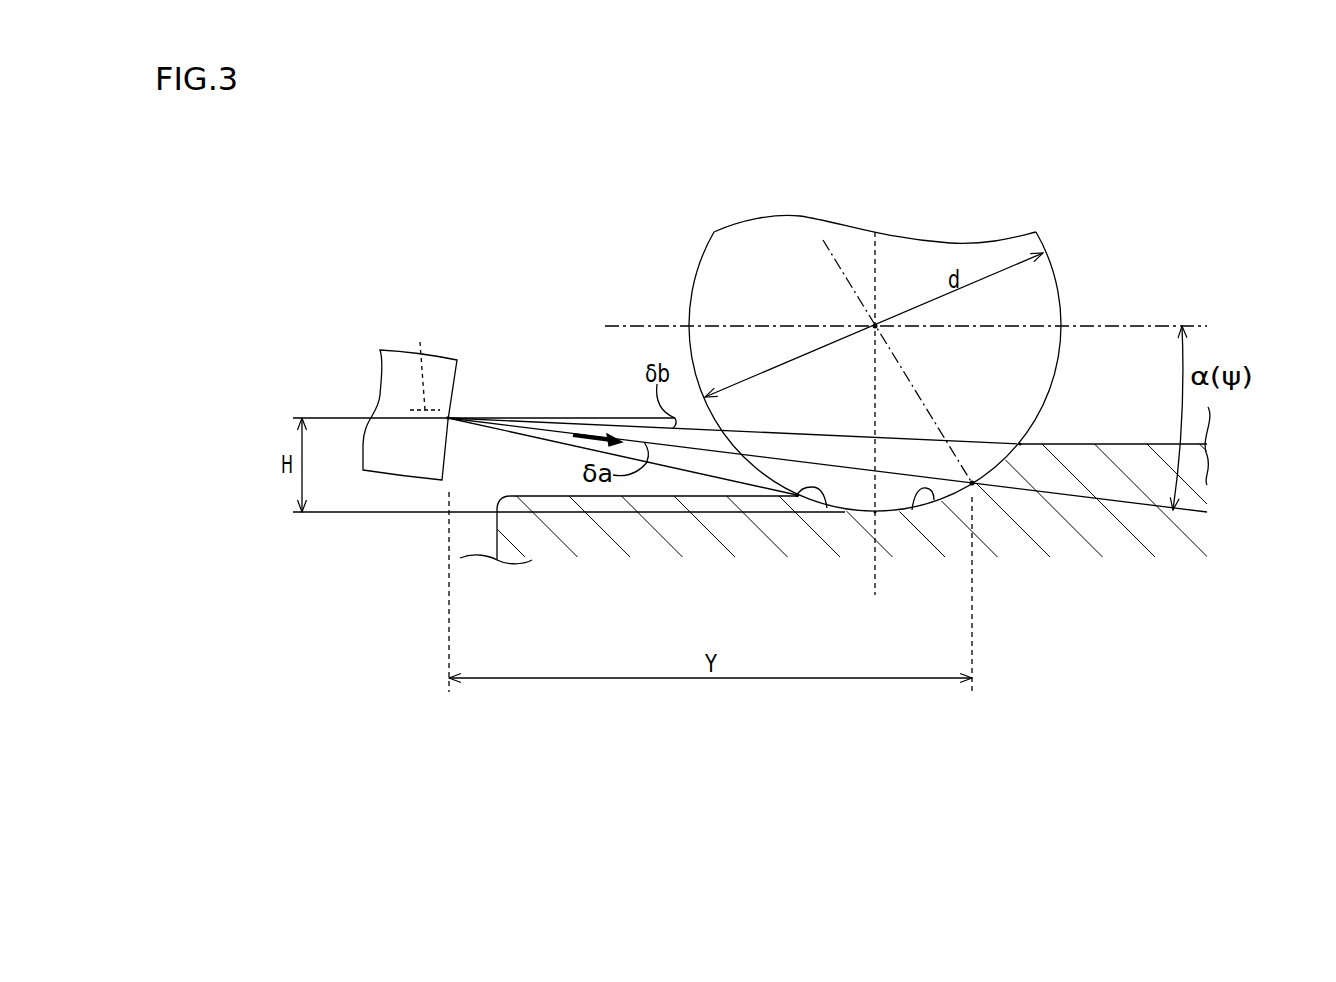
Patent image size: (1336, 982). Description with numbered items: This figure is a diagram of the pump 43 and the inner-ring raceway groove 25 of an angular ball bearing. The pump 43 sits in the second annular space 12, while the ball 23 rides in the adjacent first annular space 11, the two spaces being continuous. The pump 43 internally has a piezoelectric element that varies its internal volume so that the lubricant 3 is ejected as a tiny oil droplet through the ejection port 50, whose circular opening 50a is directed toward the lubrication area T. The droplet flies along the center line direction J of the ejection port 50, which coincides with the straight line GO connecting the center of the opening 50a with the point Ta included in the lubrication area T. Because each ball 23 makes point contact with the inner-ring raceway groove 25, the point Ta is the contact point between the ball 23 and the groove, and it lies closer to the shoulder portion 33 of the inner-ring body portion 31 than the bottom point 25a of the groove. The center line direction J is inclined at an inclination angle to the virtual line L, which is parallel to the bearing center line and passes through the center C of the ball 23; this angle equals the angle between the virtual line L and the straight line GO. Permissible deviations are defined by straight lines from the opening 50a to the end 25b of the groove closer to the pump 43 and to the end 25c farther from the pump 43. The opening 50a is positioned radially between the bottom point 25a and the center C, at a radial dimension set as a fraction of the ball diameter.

The second annular space 12 is at (364, 250).
The first annular space 11 is at (639, 250).
The ejection port 50 is at (410, 398).
The pump 43 is at (443, 383).
The opening 50a is at (450, 417).
The lubricant 3 is at (622, 440).
The center line direction J is at (583, 433).
The straight line GO is at (1098, 502).
The ball 23 is at (1045, 295).
The center C is at (873, 324).
The virtual line L is at (1152, 325).
The inner-ring body portion 31 is at (577, 533).
The shoulder portion 33 is at (1095, 443).
The inner-ring raceway groove 25 is at (917, 512).
The bottom point 25a is at (873, 513).
The end of the inner-ring raceway groove closer to the pump 25b is at (814, 514).
The end of the inner-ring raceway groove farther from the pump 25c is at (1020, 443).
The lubrication area T is at (975, 470).
The point included in the lubrication area Ta is at (974, 485).